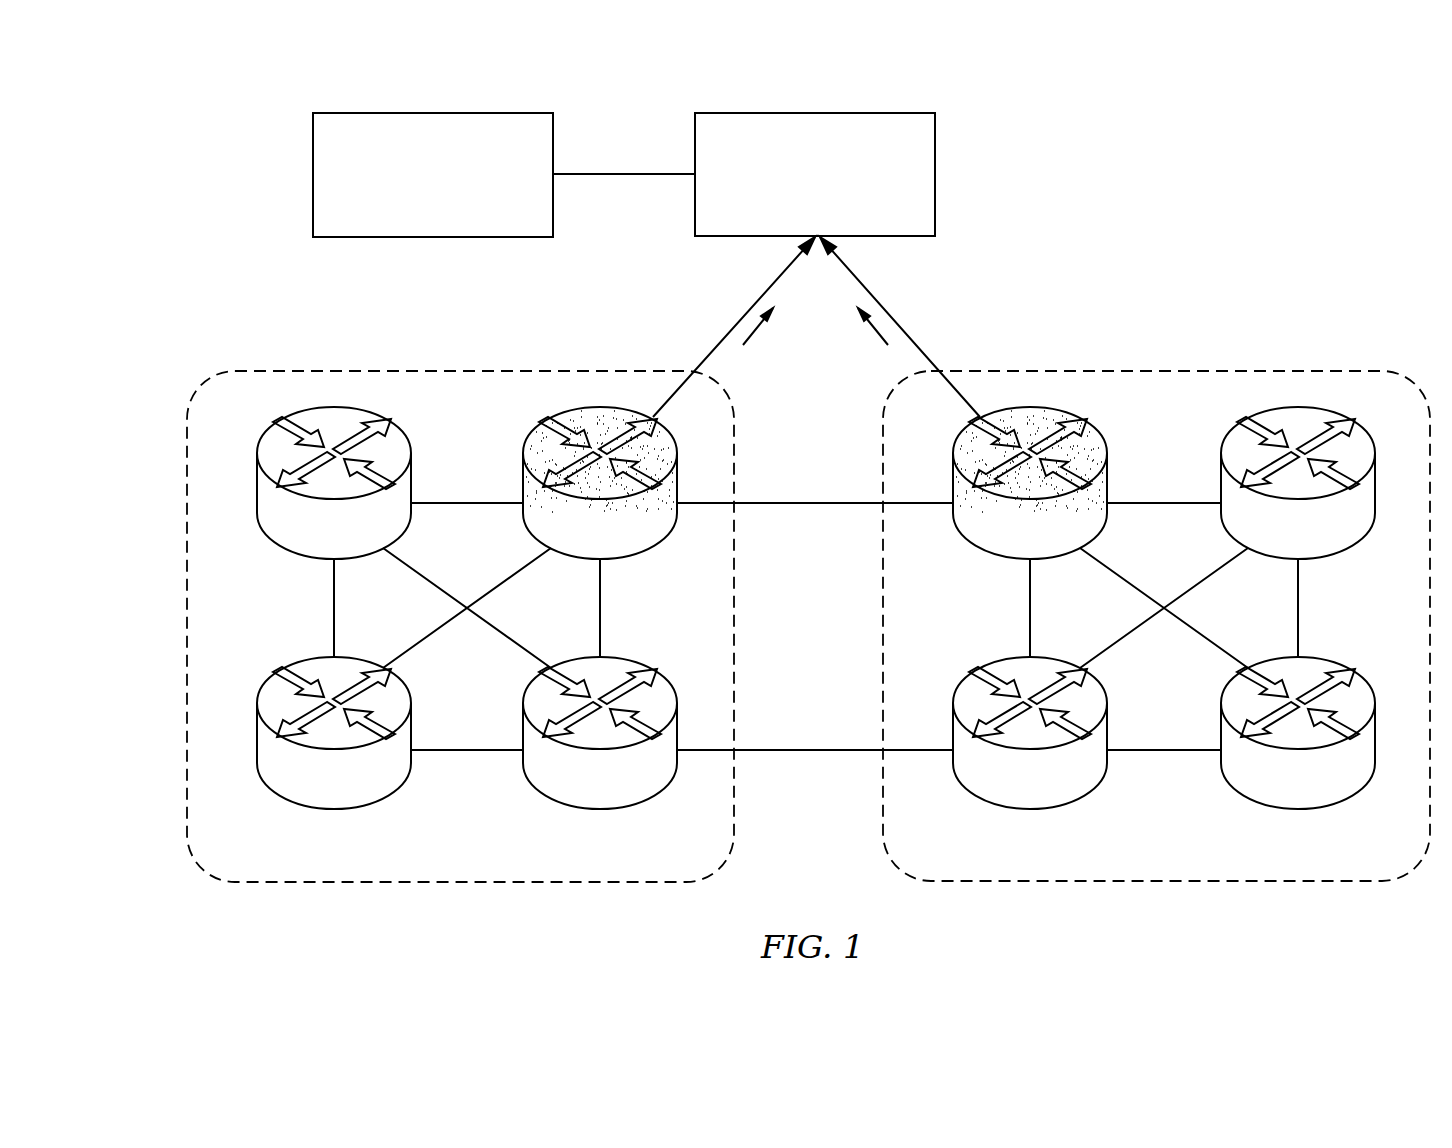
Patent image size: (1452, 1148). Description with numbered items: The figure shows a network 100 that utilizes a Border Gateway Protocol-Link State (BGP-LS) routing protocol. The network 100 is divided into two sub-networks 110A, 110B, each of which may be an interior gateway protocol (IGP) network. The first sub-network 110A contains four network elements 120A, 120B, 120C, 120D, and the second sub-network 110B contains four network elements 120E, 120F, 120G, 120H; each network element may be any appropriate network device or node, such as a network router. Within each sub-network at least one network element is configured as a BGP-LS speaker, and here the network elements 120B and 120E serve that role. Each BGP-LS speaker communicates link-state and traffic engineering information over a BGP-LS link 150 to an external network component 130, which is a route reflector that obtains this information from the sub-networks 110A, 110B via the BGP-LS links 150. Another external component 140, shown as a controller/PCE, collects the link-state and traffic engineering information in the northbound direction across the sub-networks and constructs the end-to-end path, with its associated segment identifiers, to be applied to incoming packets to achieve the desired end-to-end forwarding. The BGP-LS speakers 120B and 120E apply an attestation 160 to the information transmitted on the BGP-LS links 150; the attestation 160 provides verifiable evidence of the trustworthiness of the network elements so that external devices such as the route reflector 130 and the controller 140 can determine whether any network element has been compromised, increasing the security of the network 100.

The network 100 is at (235, 93).
The sub-network 110A is at (388, 371).
The sub-network 110B is at (1147, 372).
The network element 120A is at (358, 544).
The network element 120B is at (624, 544).
The network element 120C is at (358, 793).
The network element 120D is at (624, 793).
The network element 120E is at (1054, 544).
The network element 120F is at (1322, 544).
The network element 120G is at (1054, 793).
The network element 120H is at (1322, 793).
The external network component 130 is at (835, 204).
The external component 140 is at (450, 205).
The BGP-LS link 150 is at (733, 327).
The attestation 160 is at (743, 345).